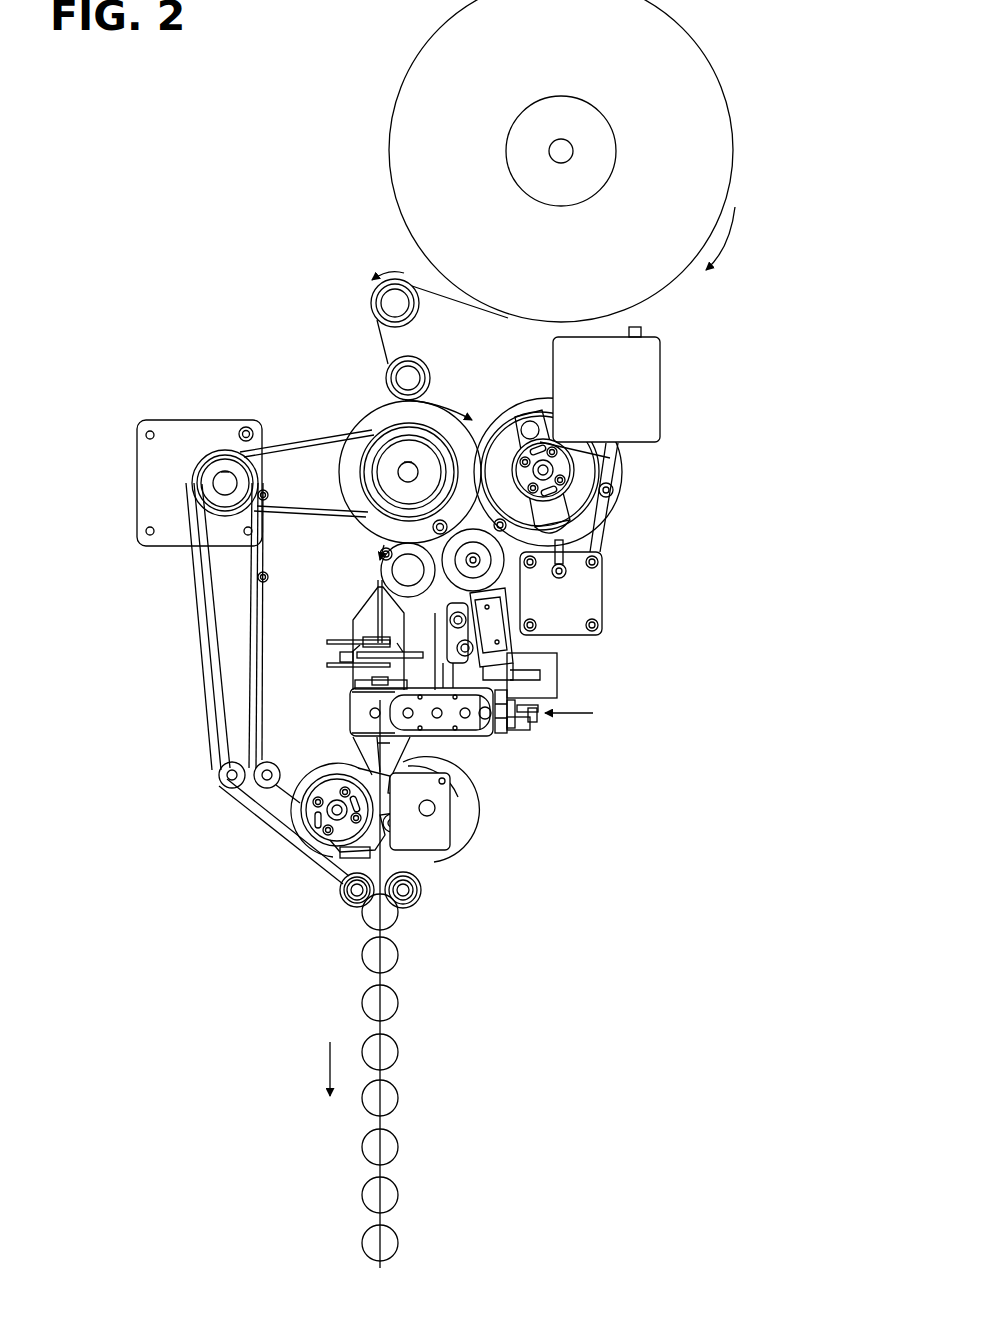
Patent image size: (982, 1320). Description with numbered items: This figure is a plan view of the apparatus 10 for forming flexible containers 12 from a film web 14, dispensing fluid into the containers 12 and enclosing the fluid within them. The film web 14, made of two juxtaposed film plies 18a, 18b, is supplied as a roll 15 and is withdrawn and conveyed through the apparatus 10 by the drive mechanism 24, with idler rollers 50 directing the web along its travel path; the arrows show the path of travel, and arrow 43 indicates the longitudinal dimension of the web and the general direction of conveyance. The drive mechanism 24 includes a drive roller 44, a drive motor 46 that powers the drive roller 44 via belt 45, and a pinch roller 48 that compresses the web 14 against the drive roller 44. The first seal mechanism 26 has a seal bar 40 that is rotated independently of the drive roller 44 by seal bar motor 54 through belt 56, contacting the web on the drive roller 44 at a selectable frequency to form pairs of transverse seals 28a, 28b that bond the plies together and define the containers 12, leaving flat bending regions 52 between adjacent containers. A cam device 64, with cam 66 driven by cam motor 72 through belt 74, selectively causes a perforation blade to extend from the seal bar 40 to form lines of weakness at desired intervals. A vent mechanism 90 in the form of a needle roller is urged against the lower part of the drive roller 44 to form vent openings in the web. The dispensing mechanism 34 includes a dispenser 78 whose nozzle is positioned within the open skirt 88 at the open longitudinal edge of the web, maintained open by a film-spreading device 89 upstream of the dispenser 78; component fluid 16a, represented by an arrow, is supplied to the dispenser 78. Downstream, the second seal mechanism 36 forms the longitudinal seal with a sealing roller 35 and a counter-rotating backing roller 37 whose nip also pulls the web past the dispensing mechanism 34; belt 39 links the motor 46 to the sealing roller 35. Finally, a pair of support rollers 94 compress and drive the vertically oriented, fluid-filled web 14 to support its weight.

The apparatus 10 is at (186, 172).
The flexible containers 12 is at (404, 1050).
The film web 14 is at (434, 291).
The roll 15 is at (394, 97).
The component fluid 16a is at (580, 712).
The film ply 18a is at (450, 742).
The film ply 18b is at (354, 607).
The drive mechanism 24 is at (377, 465).
The first seal mechanism 26 is at (599, 494).
The transverse seal 28a is at (380, 1264).
The transverse seal 28b is at (380, 1225).
The dispensing mechanism 34 is at (505, 742).
The sealing roller 35 is at (318, 830).
The second seal mechanism 36 is at (289, 813).
The backing roller 37 is at (458, 832).
The belt 39 is at (205, 723).
The seal bar 40 is at (562, 512).
The arrow 43 is at (328, 1062).
The drive roller 44 is at (342, 474).
The belt 45 is at (292, 445).
The drive motor 46 is at (137, 482).
The pinch roller 48 is at (403, 600).
The idler rollers 50 is at (372, 293).
The bending regions 52 is at (383, 1120).
The seal bar motor 54 is at (660, 374).
The belt 56 is at (513, 428).
The cam device 64 is at (628, 460).
The cam 66 is at (522, 402).
The cam motor 72 is at (602, 599).
The belt 74 is at (606, 538).
The dispenser 78 is at (448, 745).
The open skirt 88 is at (373, 600).
The film-spreading device 89 is at (330, 672).
The vent mechanism 90 is at (518, 587).
The support rollers 94 is at (414, 914).